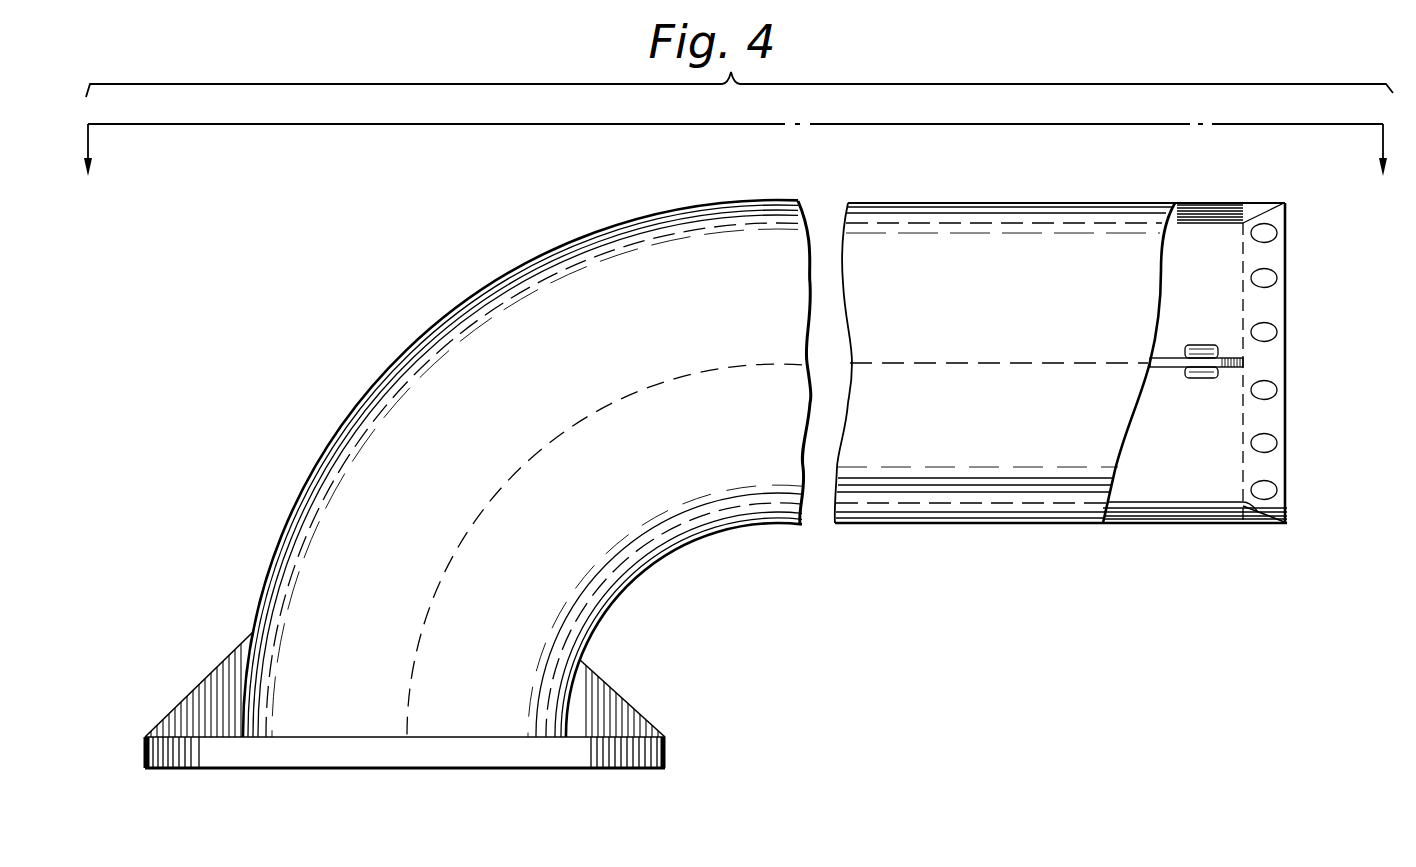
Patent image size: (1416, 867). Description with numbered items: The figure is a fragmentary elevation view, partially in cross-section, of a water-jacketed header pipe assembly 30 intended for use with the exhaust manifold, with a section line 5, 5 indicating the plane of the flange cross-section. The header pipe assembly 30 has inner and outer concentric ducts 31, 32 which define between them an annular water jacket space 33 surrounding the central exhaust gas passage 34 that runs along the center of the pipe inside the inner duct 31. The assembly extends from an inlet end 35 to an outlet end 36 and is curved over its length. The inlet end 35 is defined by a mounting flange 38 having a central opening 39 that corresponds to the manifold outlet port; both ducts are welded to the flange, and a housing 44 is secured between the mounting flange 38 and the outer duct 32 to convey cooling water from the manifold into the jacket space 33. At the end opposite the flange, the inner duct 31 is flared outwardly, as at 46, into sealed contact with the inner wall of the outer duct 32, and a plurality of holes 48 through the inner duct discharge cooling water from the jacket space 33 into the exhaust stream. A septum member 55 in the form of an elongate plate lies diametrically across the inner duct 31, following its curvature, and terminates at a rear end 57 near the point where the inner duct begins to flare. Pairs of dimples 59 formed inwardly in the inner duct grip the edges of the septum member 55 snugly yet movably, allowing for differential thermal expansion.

The section line 5- 5 is at (738, 140).
The header pipe assembly 30 is at (549, 242).
The inner duct 31 is at (1127, 502).
The outer duct 32 is at (1183, 526).
The annular water jacket space 33 is at (1132, 512).
The central exhaust gas passage 34 is at (1207, 230).
The inlet end 35 is at (363, 768).
The outlet end 36 is at (1290, 418).
The mounting flange 38 is at (147, 762).
The central opening 39 is at (266, 737).
The housing 44 is at (227, 670).
The flared portion 46 is at (1253, 526).
The holes 48 is at (1272, 334).
The septum member 55 is at (1170, 350).
The rear end 57 is at (1245, 363).
The dimples 59 is at (1195, 380).